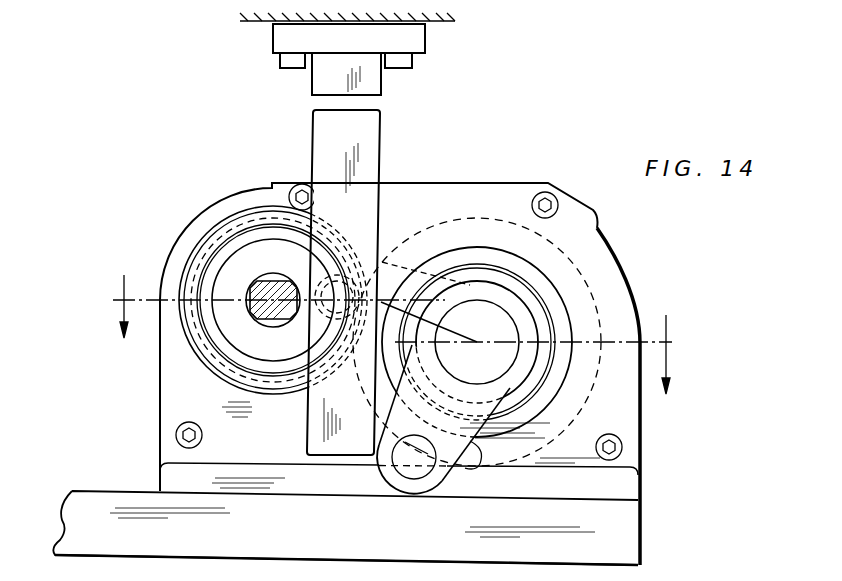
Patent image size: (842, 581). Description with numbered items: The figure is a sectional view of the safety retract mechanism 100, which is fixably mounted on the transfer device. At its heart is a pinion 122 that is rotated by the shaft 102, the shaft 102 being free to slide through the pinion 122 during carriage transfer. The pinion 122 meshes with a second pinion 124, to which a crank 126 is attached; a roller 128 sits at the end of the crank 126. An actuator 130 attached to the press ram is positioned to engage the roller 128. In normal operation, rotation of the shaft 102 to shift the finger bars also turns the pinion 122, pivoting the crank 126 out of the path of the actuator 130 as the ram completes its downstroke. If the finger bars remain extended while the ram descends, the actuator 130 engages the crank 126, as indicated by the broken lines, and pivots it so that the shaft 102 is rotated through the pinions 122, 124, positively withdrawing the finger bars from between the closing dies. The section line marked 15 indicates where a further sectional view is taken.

The section line 15- 15 is at (396, 354).
The safety retract mechanism 100 is at (135, 446).
The shaft 102 is at (262, 312).
The pinion 122 is at (222, 228).
The second pinion 124 is at (547, 236).
The crank 126 is at (465, 470).
The roller 128 is at (376, 480).
The actuator 130 is at (381, 130).